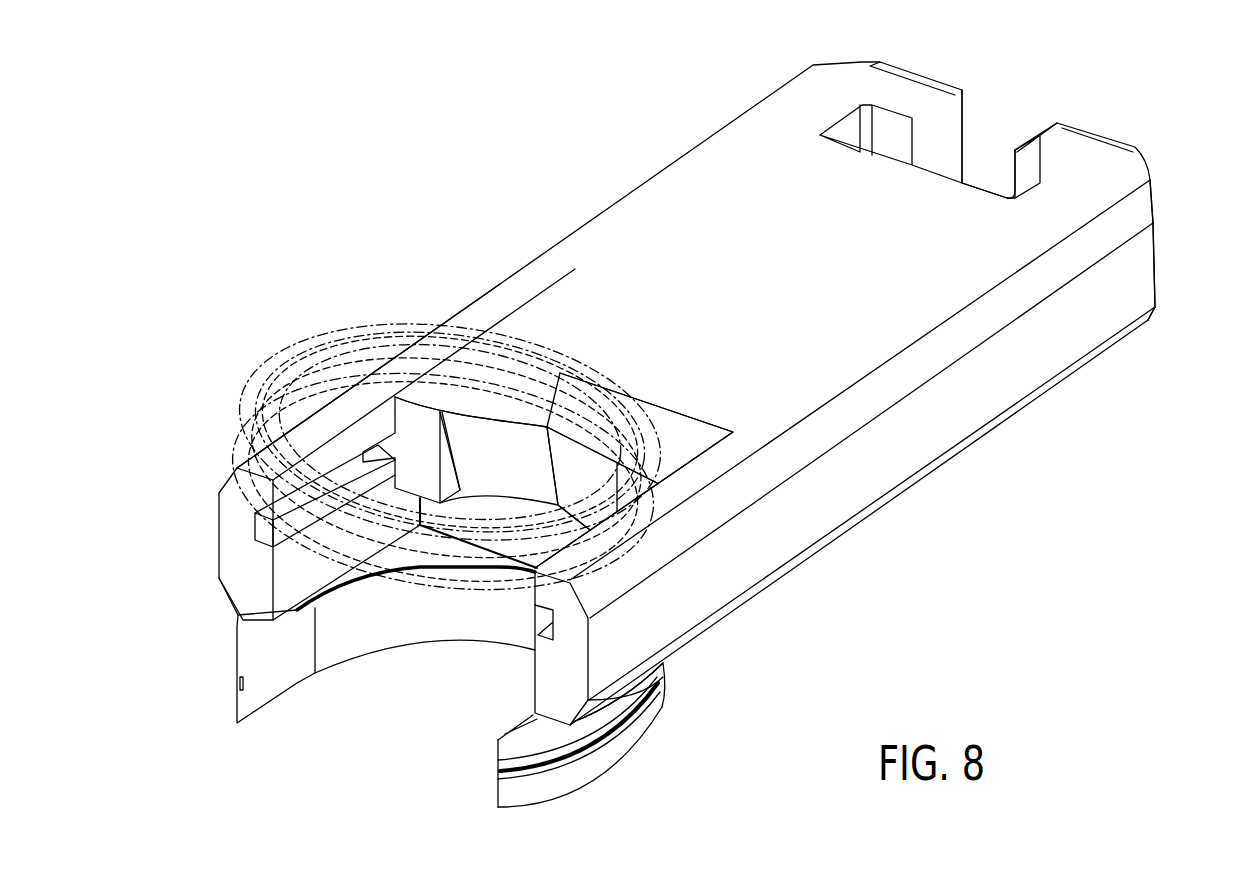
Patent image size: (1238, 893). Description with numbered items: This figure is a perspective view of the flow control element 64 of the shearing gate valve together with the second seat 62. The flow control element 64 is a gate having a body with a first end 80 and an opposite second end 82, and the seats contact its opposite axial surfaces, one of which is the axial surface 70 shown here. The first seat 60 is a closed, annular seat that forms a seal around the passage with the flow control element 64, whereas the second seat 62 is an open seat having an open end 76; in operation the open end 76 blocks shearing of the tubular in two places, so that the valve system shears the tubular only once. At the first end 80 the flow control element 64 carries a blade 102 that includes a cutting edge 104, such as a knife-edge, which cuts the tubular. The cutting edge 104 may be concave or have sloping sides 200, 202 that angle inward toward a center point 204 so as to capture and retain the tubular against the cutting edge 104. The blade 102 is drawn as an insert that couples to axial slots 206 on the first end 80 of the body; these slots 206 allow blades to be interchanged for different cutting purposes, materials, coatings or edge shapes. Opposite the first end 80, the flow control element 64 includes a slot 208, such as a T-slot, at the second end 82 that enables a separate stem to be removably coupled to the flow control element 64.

The first seat 60 is at (300, 377).
The second seat 62 is at (597, 767).
The flow control element 64 is at (656, 208).
The axial surface 70 is at (590, 250).
The open end 76 is at (255, 695).
The first end 80 is at (700, 685).
The second end 82 is at (1156, 357).
The blade 102 is at (700, 430).
The cutting edge 104 is at (488, 410).
The sloping side 200 is at (513, 418).
The sloping side 202 is at (652, 403).
The center point 204 is at (572, 405).
The slots 206 is at (263, 527).
The slot 208 is at (897, 135).